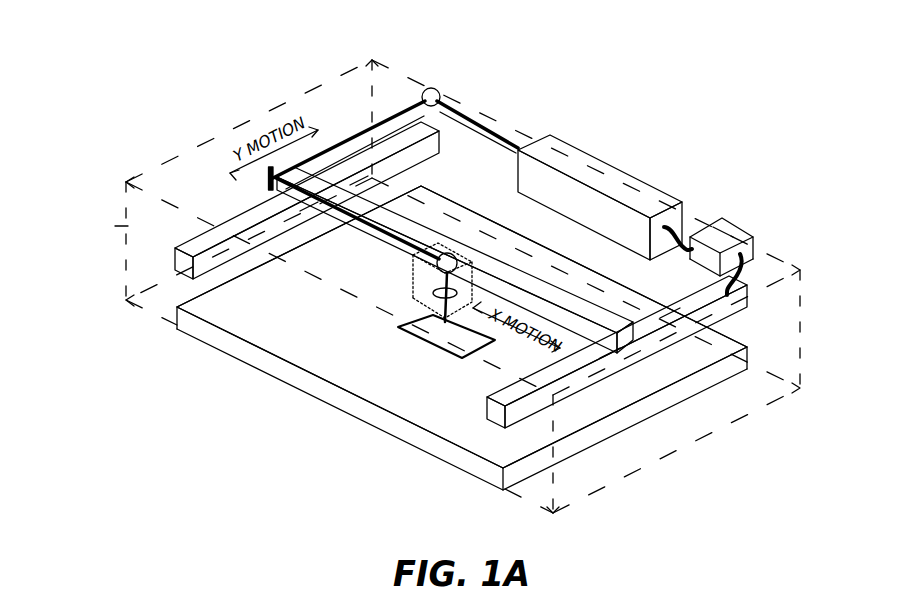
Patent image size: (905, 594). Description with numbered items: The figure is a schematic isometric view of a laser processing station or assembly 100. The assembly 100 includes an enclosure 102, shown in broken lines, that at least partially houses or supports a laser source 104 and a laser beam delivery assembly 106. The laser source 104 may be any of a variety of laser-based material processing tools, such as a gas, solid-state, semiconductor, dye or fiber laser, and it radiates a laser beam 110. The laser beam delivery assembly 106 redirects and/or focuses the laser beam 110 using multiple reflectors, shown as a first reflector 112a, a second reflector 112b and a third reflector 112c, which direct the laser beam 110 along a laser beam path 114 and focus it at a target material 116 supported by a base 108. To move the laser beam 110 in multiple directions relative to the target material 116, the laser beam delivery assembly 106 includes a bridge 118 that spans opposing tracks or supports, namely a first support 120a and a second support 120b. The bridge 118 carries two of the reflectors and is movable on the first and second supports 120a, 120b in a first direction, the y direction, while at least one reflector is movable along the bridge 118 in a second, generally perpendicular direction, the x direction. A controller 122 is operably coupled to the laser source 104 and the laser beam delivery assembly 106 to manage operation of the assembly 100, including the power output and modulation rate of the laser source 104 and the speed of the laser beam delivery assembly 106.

The laser processing station or assembly 100 is at (763, 116).
The enclosure 102 is at (115, 227).
The laser source 104 is at (583, 173).
The laser beam delivery assembly 106 is at (376, 387).
The base 108 is at (597, 435).
The laser beam 110 is at (445, 293).
The first reflector 112a is at (433, 90).
The second reflector 112b is at (267, 183).
The third reflector 112c is at (412, 270).
The laser beam path 114 is at (367, 217).
The target material 116 is at (463, 345).
The bridge 118 is at (613, 333).
The first support 120a is at (697, 322).
The second support 120b is at (209, 236).
The controller 122 is at (733, 233).